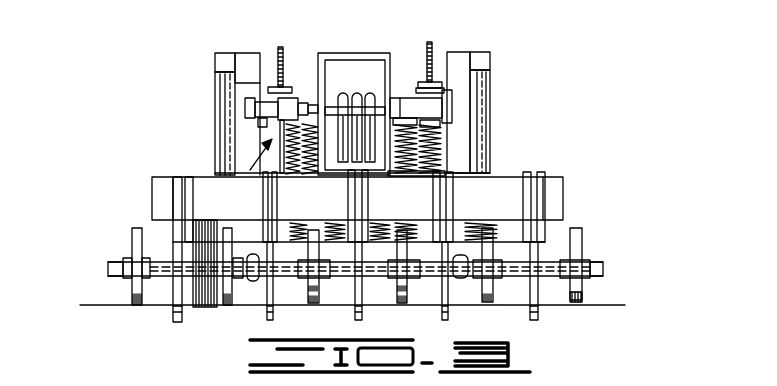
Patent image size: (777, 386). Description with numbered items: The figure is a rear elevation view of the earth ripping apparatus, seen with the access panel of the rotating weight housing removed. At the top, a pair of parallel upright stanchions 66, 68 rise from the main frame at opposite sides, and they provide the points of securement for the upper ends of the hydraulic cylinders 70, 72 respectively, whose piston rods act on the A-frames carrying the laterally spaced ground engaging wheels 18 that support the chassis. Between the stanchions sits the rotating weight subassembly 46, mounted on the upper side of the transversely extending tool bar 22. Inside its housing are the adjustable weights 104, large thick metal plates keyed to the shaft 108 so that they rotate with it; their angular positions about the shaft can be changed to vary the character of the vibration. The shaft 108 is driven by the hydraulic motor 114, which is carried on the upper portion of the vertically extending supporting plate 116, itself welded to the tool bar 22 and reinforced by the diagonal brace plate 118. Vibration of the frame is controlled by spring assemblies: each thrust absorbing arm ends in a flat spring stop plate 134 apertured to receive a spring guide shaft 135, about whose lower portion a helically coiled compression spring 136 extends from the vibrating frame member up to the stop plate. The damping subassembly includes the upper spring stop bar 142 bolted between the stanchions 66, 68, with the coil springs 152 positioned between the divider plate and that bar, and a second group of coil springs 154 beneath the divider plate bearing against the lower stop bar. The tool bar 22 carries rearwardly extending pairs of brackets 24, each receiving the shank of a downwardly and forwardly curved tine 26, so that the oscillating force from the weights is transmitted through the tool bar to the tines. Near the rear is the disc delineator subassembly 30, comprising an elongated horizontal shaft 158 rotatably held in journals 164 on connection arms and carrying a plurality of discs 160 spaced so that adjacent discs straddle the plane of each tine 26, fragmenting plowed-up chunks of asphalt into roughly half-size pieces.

The stanchion 68 is at (247, 58).
The hydraulic cylinder 72 is at (220, 82).
The stanchion 66 is at (460, 57).
The hydraulic cylinder 70 is at (484, 92).
The rotating weight subassembly 46 is at (356, 46).
The shaft 108 is at (333, 103).
The adjustable weights 104 is at (327, 172).
The hydraulic motor 114 is at (291, 98).
The supporting plate 116 is at (275, 143).
The diagonal brace plate 118 is at (257, 170).
The spring guide shaft 135 is at (431, 42).
The upper spring stop bar 142 is at (413, 107).
The spring stop plate 134 is at (440, 137).
The compression spring 136 is at (440, 165).
The coil springs 152 is at (412, 177).
The brackets 24 is at (170, 191).
The tool bar 22 is at (398, 206).
The coil springs 154 is at (342, 245).
The tines 26 is at (524, 192).
The ground engaging wheels 18 is at (203, 300).
The disc delineator subassembly 30 is at (118, 286).
The journals 164 is at (258, 280).
The shaft 158 is at (598, 262).
The discs 160 is at (580, 305).